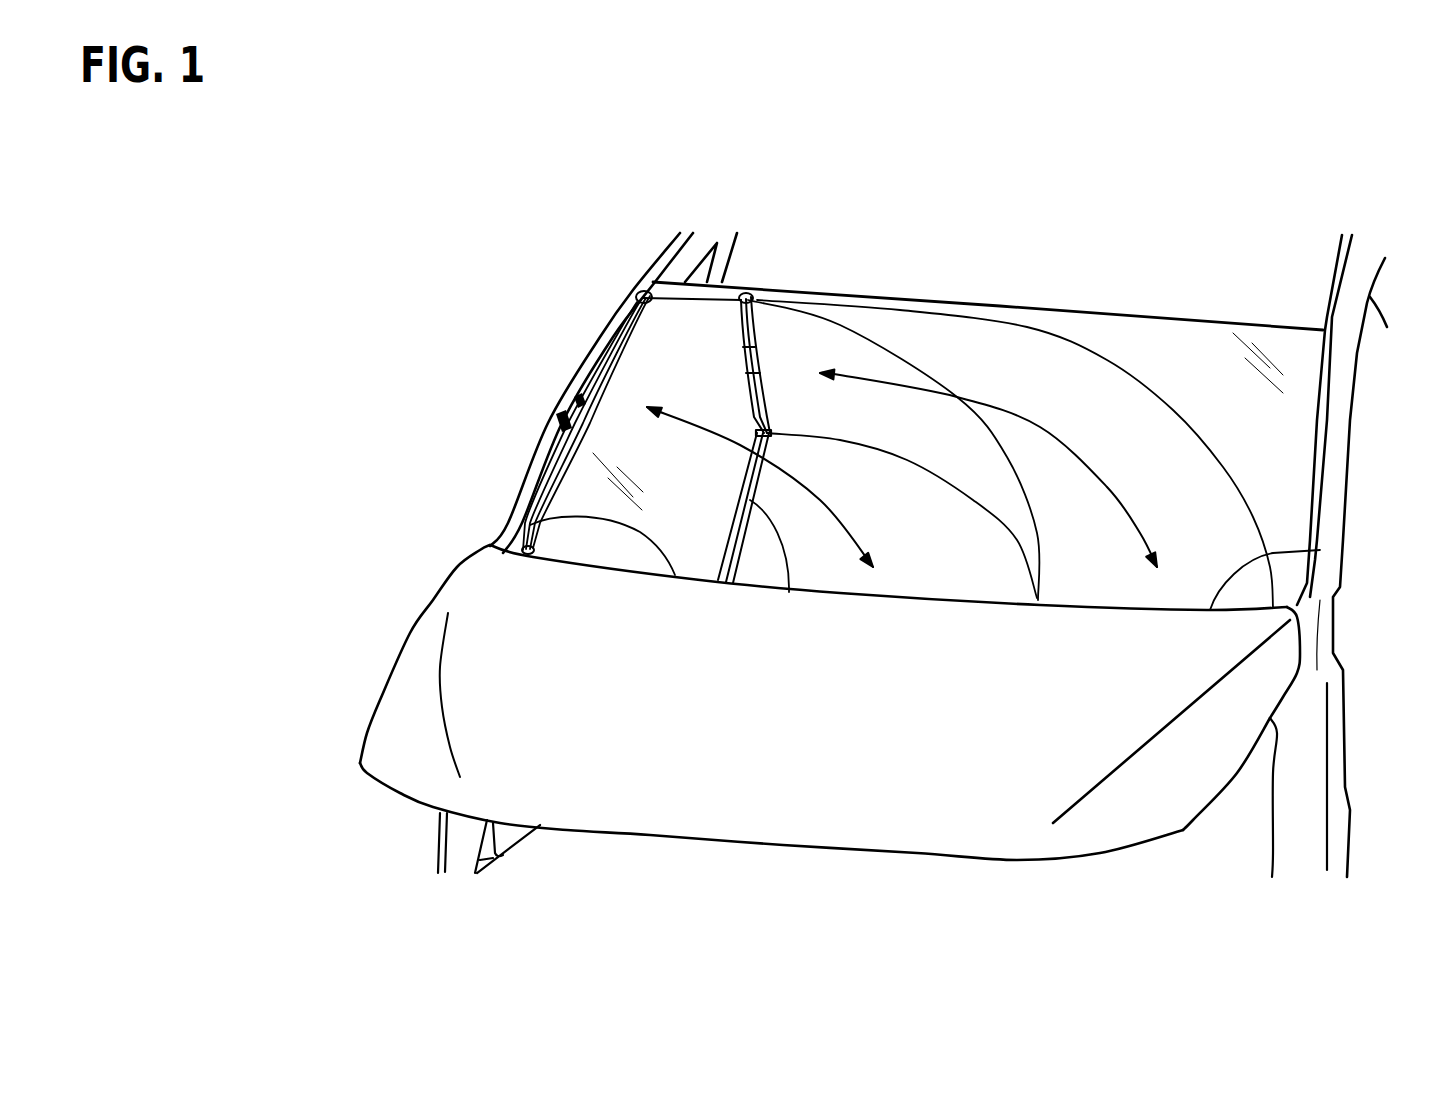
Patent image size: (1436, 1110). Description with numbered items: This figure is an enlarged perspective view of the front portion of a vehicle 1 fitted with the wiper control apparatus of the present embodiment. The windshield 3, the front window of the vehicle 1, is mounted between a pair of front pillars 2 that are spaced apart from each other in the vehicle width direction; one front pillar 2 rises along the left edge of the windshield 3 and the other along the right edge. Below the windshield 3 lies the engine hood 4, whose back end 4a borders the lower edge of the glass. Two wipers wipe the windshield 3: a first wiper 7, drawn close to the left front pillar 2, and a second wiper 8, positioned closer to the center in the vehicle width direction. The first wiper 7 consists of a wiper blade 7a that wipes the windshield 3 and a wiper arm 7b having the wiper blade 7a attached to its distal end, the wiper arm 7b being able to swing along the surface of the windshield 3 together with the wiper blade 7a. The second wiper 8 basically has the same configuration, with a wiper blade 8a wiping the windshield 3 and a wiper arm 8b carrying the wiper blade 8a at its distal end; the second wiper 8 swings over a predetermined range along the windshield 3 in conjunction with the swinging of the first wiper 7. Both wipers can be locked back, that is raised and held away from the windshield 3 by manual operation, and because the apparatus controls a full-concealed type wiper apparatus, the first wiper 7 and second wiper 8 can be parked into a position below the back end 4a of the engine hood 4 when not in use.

The vehicle 1 is at (527, 382).
The front pillar 2 is at (598, 337).
The windshield 3 is at (1062, 320).
The engine hood 4 is at (407, 697).
The back end of engine hood 4a is at (1317, 547).
The first wiper 7 is at (644, 337).
The wiper blade 7a is at (622, 310).
The wiper arm 7b is at (530, 472).
The second wiper 8 is at (778, 363).
The wiper blade 8a is at (757, 333).
The wiper arm 8b is at (789, 592).